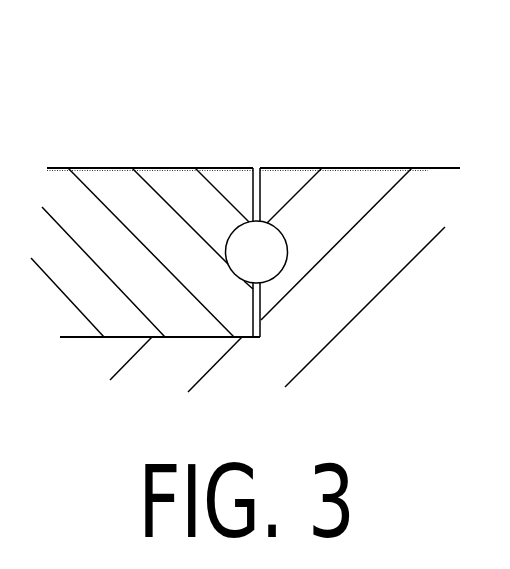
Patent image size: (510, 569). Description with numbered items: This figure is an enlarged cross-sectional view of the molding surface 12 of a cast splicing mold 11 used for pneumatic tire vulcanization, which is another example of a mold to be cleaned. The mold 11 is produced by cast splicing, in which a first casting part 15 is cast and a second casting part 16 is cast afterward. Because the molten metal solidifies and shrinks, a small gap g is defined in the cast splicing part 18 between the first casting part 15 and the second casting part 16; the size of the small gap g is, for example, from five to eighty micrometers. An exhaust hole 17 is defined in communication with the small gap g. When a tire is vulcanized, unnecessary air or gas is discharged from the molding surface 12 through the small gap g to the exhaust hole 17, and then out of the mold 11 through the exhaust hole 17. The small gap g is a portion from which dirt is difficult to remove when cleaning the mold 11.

The mold 11 is at (430, 168).
The molding surface 12 is at (333, 168).
The first casting part 15 is at (377, 183).
The second casting part 16 is at (112, 180).
The exhaust hole 17 is at (274, 256).
The cast splicing part 18 is at (256, 197).
The small gap g is at (260, 168).